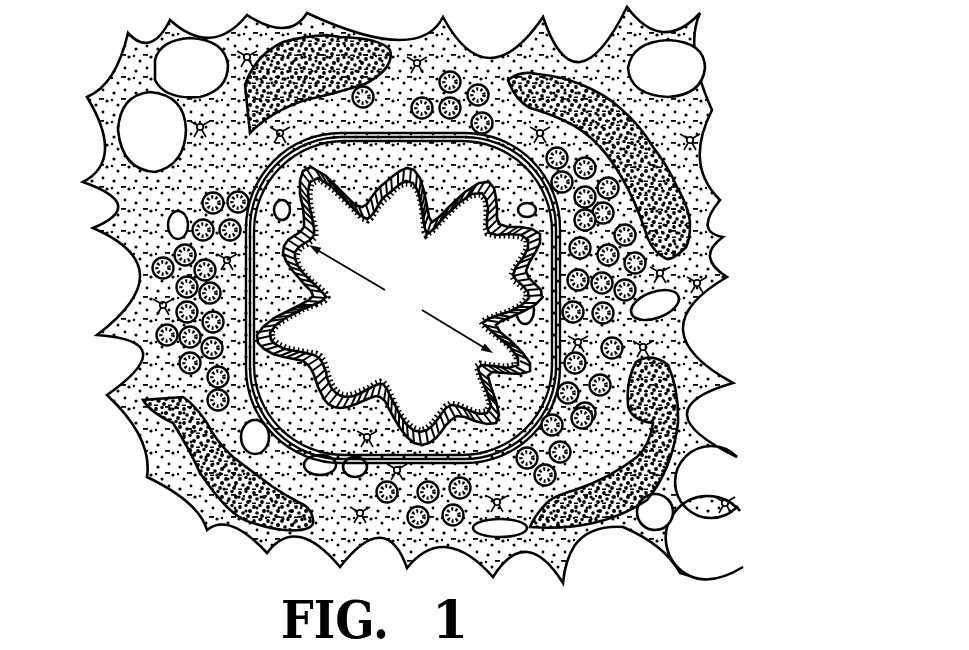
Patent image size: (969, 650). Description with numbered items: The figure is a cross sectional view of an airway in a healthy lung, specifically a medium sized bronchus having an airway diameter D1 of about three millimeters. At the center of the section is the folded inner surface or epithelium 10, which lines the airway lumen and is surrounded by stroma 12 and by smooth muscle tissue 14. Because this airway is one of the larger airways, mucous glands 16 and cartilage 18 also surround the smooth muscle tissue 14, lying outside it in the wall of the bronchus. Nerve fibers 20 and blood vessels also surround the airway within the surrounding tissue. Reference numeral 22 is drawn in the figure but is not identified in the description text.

The epithelium 10 is at (253, 175).
The stroma 12 is at (200, 395).
The smooth muscle tissue 14 is at (250, 233).
The mucous glands 16 is at (165, 268).
The cartilage 18 is at (190, 485).
The nerve fibers 20 is at (163, 303).
The blood vessel 22 is at (243, 185).
The airway diameter D1 is at (401, 299).